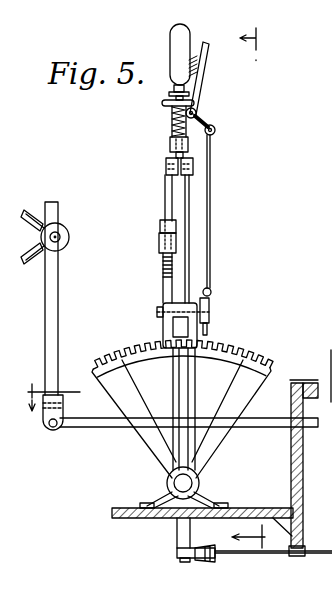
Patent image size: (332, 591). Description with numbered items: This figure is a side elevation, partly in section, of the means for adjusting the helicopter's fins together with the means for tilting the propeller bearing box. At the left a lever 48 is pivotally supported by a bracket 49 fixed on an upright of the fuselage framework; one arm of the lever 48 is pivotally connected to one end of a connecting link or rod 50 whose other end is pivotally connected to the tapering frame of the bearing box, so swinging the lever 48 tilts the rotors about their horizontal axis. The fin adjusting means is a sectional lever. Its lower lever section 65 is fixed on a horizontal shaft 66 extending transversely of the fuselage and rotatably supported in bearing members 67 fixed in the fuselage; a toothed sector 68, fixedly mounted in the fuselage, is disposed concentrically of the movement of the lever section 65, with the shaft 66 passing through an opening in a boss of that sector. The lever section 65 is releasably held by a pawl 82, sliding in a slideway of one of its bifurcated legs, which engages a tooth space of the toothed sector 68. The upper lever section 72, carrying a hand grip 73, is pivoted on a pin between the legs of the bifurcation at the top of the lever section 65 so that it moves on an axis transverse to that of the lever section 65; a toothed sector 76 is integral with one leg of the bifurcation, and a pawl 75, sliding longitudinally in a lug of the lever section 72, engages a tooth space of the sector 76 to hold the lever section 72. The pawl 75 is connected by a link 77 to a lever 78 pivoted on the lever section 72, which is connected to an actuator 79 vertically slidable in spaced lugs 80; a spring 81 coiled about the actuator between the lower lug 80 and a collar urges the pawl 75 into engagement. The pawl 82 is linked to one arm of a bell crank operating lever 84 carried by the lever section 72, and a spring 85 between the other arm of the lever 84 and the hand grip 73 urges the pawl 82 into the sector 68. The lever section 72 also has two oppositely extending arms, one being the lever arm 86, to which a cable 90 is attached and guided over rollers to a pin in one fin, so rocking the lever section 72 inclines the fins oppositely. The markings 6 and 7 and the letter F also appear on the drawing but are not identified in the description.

The hand grip 73 is at (176, 43).
The spring 85 is at (194, 62).
The actuator 79 is at (168, 96).
The bell crank operating lever 84 is at (200, 122).
The spring 81 is at (172, 124).
The lugs 80 is at (170, 146).
The link 77 is at (165, 195).
The lever 78 is at (189, 180).
The lever section 72 is at (189, 232).
The pawl 75 is at (160, 228).
The toothed sector 76 is at (165, 282).
The lever arm 86 is at (165, 301).
The pawl 82 is at (210, 322).
The bracket 49 is at (45, 203).
The lever 48 is at (58, 290).
The section line 6 is at (53, 412).
The section line 7 is at (242, 284).
The connecting link or rod 50 is at (101, 429).
The toothed sector 68 is at (240, 392).
The lever section 65 is at (192, 396).
The horizontal shaft 66 is at (196, 486).
The bearing members 67 is at (162, 494).
The frame base F is at (276, 484).
The cable 90 is at (331, 351).